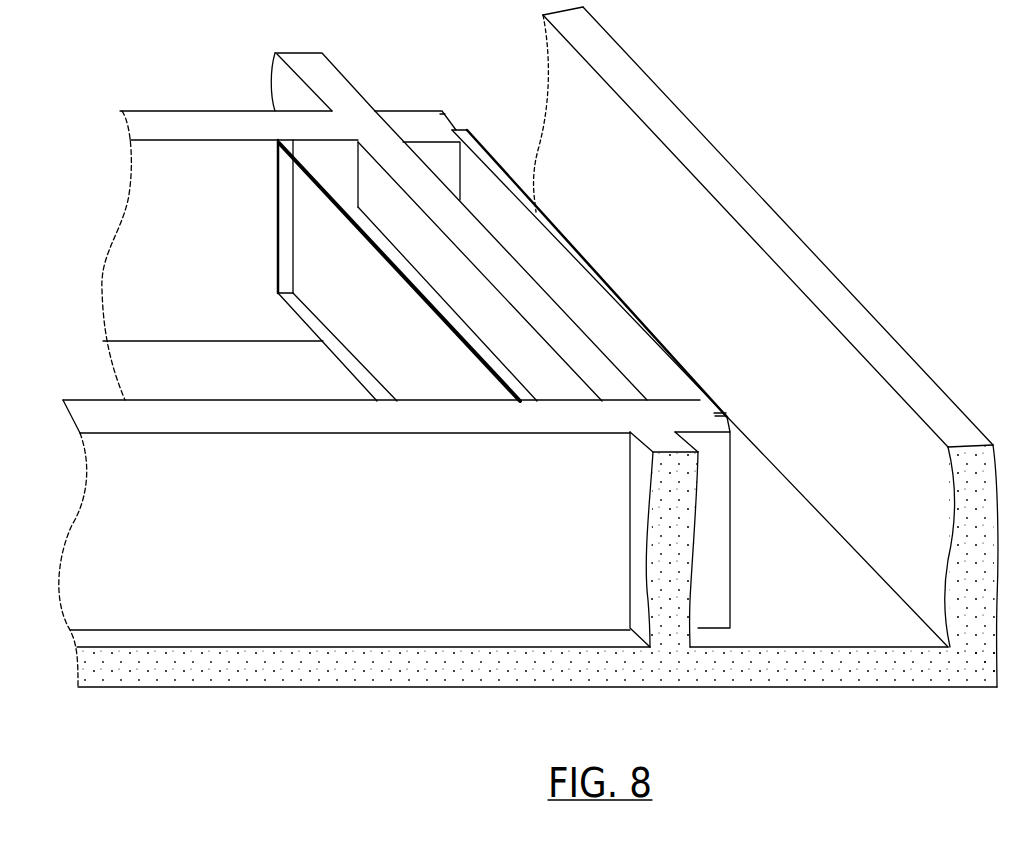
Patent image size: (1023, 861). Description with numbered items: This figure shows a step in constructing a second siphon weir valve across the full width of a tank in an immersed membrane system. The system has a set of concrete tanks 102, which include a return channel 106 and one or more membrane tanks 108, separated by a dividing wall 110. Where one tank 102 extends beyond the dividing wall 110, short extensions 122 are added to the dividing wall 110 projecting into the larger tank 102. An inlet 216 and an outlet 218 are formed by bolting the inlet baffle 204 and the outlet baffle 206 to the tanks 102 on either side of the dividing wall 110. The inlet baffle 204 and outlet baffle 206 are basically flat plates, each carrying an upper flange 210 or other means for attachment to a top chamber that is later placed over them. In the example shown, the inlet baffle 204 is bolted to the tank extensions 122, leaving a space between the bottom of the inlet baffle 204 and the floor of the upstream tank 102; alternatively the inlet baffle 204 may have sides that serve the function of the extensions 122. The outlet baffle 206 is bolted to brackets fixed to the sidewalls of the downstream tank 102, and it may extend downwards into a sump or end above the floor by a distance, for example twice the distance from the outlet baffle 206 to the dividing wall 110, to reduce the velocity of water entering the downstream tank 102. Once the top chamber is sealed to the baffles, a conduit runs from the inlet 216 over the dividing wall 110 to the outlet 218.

The tank 102 is at (528, 347).
The return channel 106 is at (862, 413).
The membrane tank 108 is at (240, 287).
The dividing wall 110 is at (517, 284).
The extension 122 is at (417, 127).
The inlet baffle 204 is at (607, 327).
The outlet baffle 206 is at (360, 347).
The upper flange 210 is at (468, 337).
The inlet 216 is at (508, 196).
The outlet 218 is at (327, 163).